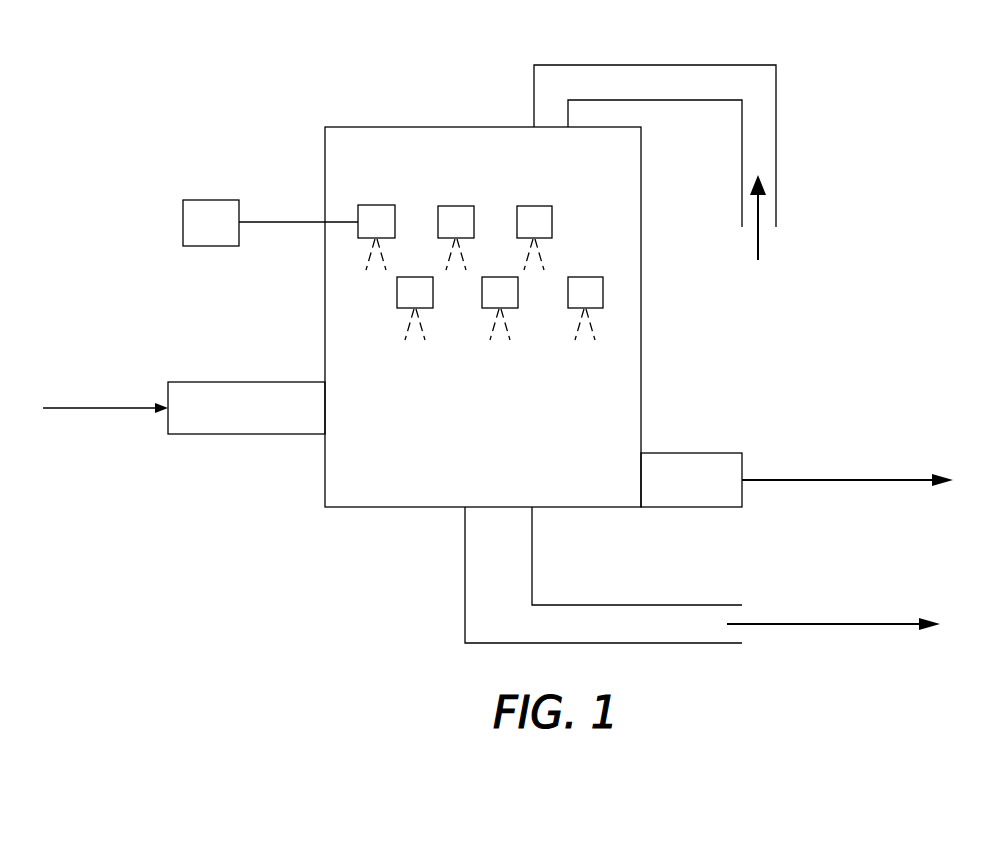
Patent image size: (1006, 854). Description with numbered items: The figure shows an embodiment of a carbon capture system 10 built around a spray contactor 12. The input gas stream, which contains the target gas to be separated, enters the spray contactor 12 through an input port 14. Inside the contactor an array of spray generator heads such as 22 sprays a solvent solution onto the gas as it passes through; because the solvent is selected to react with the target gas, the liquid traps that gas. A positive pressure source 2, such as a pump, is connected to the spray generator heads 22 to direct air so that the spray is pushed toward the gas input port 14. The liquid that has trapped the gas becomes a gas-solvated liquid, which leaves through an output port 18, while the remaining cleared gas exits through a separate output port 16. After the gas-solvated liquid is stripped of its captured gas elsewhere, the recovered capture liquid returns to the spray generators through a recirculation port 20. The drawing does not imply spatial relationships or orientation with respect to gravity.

The system 10 is at (916, 156).
The spray contactor 12 is at (324, 158).
The positive pressure source 2 is at (203, 200).
The spray generator head 22 is at (452, 206).
The input port 14 is at (238, 382).
The output port 16 is at (700, 453).
The output port 18 is at (647, 605).
The port 20 is at (777, 136).